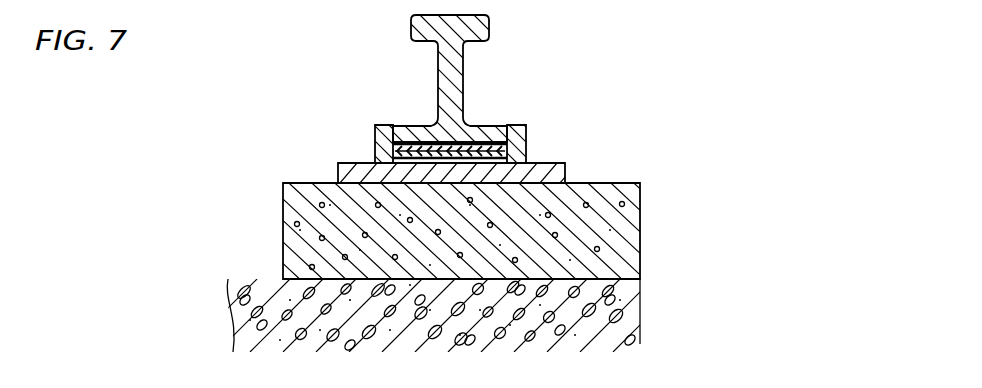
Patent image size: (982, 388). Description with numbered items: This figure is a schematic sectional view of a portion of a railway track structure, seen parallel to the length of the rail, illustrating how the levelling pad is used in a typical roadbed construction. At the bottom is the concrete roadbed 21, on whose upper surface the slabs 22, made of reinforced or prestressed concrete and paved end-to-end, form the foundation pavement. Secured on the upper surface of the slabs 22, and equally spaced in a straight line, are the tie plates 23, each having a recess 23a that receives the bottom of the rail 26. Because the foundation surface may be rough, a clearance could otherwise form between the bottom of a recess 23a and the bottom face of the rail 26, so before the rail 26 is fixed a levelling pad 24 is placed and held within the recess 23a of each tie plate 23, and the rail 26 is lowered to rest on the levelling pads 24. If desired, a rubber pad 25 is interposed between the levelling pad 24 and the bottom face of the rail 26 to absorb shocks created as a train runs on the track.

The concrete roadbed 21 is at (251, 290).
The slabs 22 is at (296, 231).
The tie plates 23 is at (387, 147).
The recesses 23a is at (401, 140).
The levelling pads 24 is at (507, 156).
The rubber pads 25 is at (486, 142).
The rail 26 is at (475, 30).